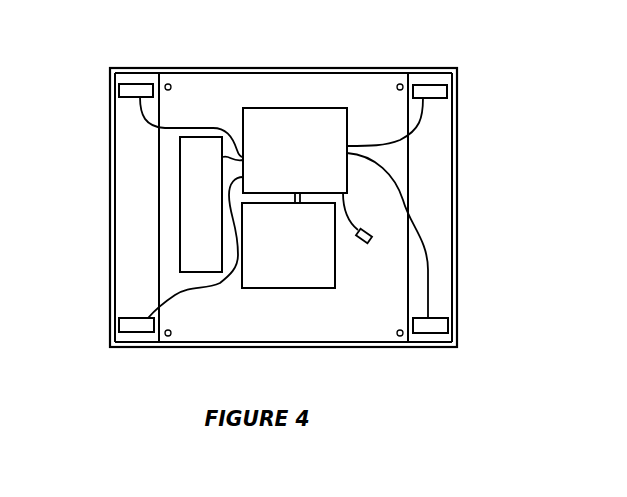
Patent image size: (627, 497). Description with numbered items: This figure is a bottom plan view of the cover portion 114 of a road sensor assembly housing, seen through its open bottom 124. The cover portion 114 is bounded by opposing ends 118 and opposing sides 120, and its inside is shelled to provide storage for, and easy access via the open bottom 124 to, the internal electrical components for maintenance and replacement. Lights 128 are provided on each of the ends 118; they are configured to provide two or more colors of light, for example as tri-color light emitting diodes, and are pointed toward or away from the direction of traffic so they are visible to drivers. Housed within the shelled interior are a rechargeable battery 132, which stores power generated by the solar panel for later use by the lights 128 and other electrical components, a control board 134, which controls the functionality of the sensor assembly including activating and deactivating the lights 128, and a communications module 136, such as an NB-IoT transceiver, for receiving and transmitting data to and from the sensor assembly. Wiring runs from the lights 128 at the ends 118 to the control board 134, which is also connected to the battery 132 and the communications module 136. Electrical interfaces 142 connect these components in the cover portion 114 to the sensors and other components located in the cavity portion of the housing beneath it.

The cover portion 114 is at (510, 137).
The opposing ends 118 is at (112, 220).
The opposing sides 120 is at (234, 68).
The open bottom 124 is at (301, 84).
The lights 128 is at (137, 91).
The rechargeable battery 132 is at (293, 288).
The control board 134 is at (243, 122).
The communications module 136 is at (180, 200).
The electrical interfaces 142 is at (372, 243).